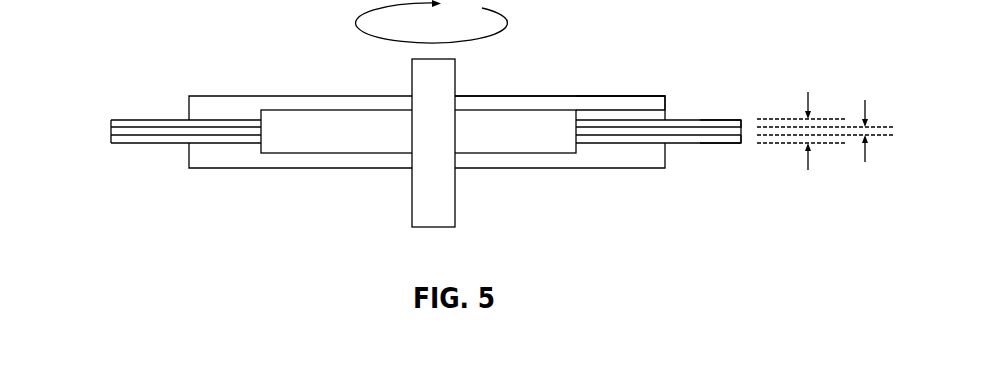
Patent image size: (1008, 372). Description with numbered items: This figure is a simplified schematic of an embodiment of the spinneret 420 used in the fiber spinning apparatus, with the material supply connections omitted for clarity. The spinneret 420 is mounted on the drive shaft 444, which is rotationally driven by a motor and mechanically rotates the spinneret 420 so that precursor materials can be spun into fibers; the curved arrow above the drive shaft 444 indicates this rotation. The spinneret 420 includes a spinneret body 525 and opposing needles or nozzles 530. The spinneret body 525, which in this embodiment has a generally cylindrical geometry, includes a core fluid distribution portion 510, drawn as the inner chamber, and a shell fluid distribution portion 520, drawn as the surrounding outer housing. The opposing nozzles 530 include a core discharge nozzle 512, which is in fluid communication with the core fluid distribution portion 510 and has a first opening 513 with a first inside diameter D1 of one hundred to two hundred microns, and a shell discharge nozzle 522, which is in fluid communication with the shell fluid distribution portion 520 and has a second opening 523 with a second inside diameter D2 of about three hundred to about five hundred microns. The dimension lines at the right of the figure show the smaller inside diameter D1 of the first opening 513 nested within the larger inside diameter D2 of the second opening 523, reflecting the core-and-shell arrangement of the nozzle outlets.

The spinneret 420 is at (574, 80).
The drive shaft 444 is at (455, 188).
The core fluid distribution portion 510 is at (390, 141).
The core discharge nozzle 512 is at (111, 129).
The first opening 513 is at (742, 128).
The shell fluid distribution portion 520 is at (248, 161).
The shell discharge nozzle 522 is at (142, 118).
The second opening 523 is at (742, 136).
The spinneret body 525 is at (495, 92).
The opposing needles or nozzles 530 is at (708, 116).
The first inside diameter D1 is at (825, 118).
The second inside diameter D2 is at (802, 116).